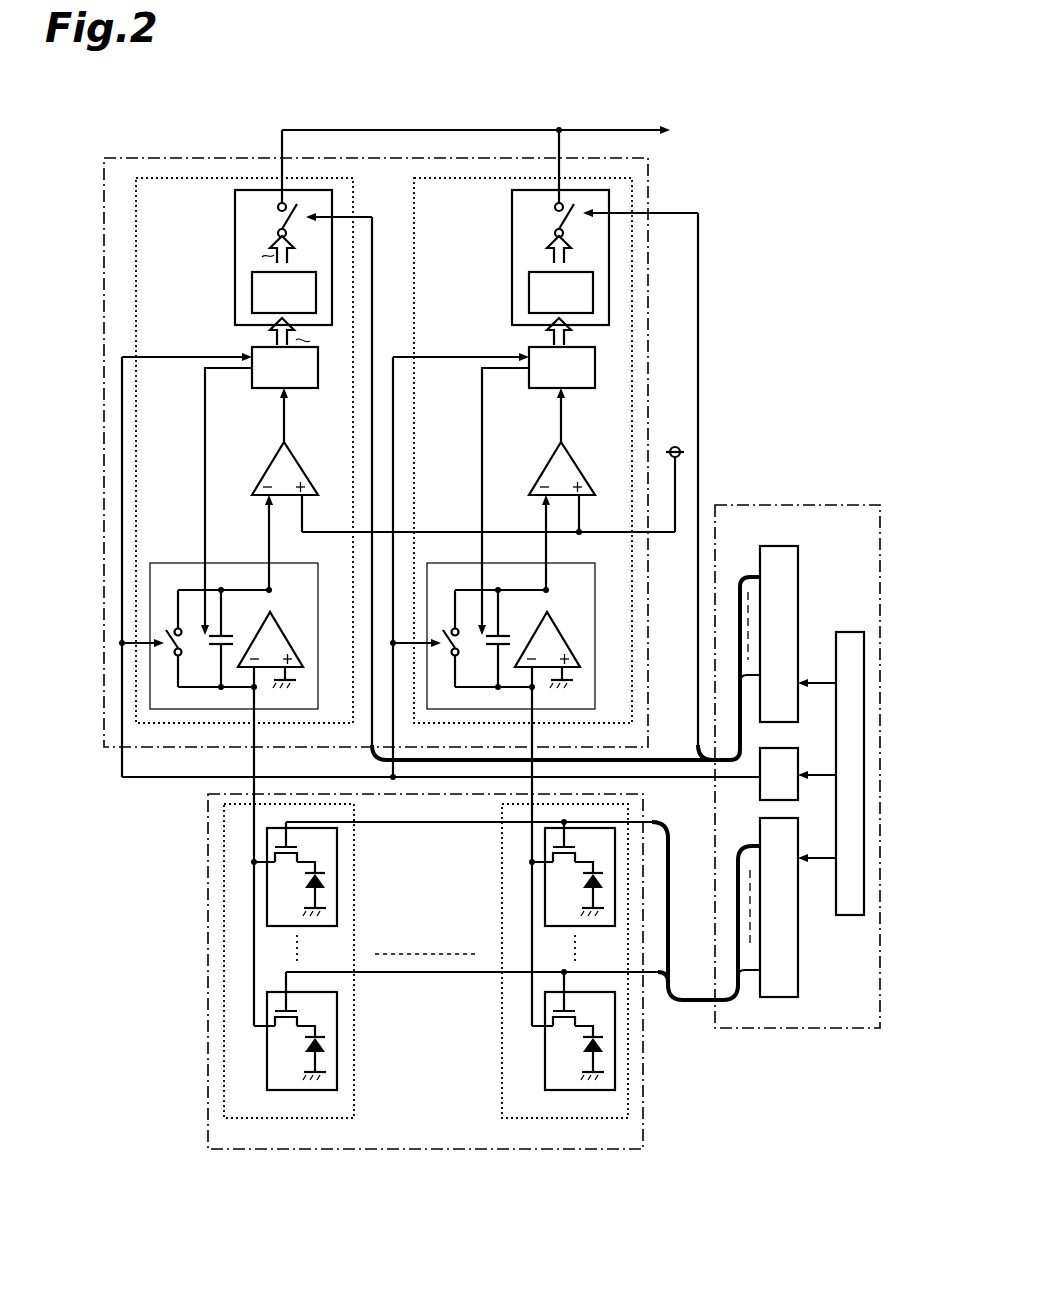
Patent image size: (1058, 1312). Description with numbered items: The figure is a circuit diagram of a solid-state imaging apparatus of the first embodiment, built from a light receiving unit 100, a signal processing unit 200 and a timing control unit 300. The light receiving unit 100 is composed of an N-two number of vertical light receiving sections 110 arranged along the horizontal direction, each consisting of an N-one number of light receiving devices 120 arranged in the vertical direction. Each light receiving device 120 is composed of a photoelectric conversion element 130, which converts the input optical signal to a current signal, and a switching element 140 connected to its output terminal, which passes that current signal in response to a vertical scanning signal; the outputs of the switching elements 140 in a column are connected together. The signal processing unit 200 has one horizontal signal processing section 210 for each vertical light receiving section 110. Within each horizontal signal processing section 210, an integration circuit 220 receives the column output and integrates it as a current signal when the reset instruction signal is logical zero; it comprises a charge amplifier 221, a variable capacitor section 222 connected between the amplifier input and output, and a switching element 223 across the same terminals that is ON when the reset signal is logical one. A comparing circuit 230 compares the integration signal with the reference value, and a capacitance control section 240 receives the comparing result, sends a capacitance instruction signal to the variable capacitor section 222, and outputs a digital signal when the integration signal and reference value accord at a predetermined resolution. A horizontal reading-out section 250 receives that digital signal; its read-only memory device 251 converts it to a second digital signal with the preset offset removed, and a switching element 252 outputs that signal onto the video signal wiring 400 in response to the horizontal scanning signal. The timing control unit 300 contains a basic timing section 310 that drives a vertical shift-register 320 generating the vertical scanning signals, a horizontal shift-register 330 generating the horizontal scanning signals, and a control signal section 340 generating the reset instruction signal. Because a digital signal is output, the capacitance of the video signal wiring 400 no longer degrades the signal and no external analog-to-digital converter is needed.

The light receiving unit 100 is at (643, 1132).
The vertical light receiving section 110 is at (356, 1104).
The light receiving device 120 is at (338, 863).
The photoelectric conversion element 130 is at (328, 1043).
The switching element 140 is at (285, 1027).
The signal processing unit 200 is at (158, 157).
The horizontal signal processing section 210 is at (355, 194).
The integration circuit 220 is at (327, 553).
The charge amplifier 221 is at (290, 640).
The variable capacitor section 222 is at (223, 636).
The switching element 223 is at (173, 622).
The comparing circuit 230 is at (301, 466).
The capacitance control section 240 is at (316, 386).
The horizontal reading-out section 250 is at (235, 315).
The read-only memory device 251 is at (250, 283).
The switching element 252 is at (289, 226).
The timing control unit 300 is at (745, 505).
The basic timing section 310 is at (852, 916).
The vertical shift-register 320 is at (800, 976).
The horizontal shift-register 330 is at (799, 576).
The control signal section 340 is at (760, 802).
The video signal wiring 400 is at (332, 128).